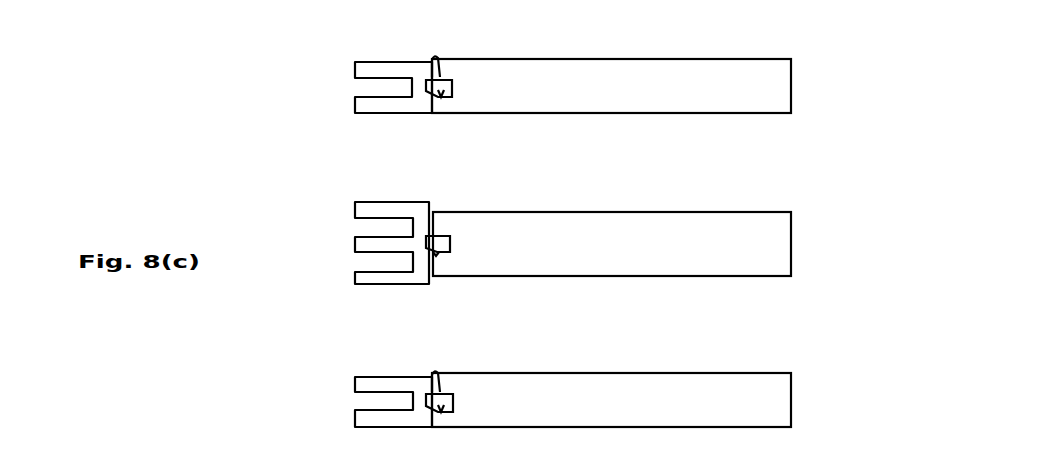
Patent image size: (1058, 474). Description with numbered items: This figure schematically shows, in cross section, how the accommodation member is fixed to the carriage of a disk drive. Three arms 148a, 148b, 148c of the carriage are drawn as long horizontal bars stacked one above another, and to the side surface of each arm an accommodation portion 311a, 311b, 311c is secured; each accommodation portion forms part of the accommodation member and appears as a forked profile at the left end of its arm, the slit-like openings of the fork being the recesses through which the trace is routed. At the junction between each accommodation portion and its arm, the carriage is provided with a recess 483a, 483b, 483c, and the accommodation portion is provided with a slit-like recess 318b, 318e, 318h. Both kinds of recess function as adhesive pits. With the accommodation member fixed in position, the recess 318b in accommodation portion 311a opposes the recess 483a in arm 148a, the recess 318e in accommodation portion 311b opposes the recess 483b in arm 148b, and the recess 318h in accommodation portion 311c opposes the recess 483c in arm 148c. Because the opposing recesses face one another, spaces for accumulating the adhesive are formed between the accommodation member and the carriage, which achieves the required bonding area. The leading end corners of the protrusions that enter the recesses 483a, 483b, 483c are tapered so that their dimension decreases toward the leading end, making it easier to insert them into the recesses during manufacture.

The arm 148a is at (630, 59).
The arm 148b is at (640, 212).
The arm 148c is at (643, 373).
The accommodation portion 311a is at (377, 62).
The accommodation portion 311b is at (380, 202).
The accommodation portion 311c is at (382, 377).
The recess 318b is at (436, 58).
The recess 318e is at (437, 253).
The recess 318h is at (436, 375).
The recess 483a is at (437, 98).
The recess 483b is at (443, 238).
The recess 483c is at (437, 412).